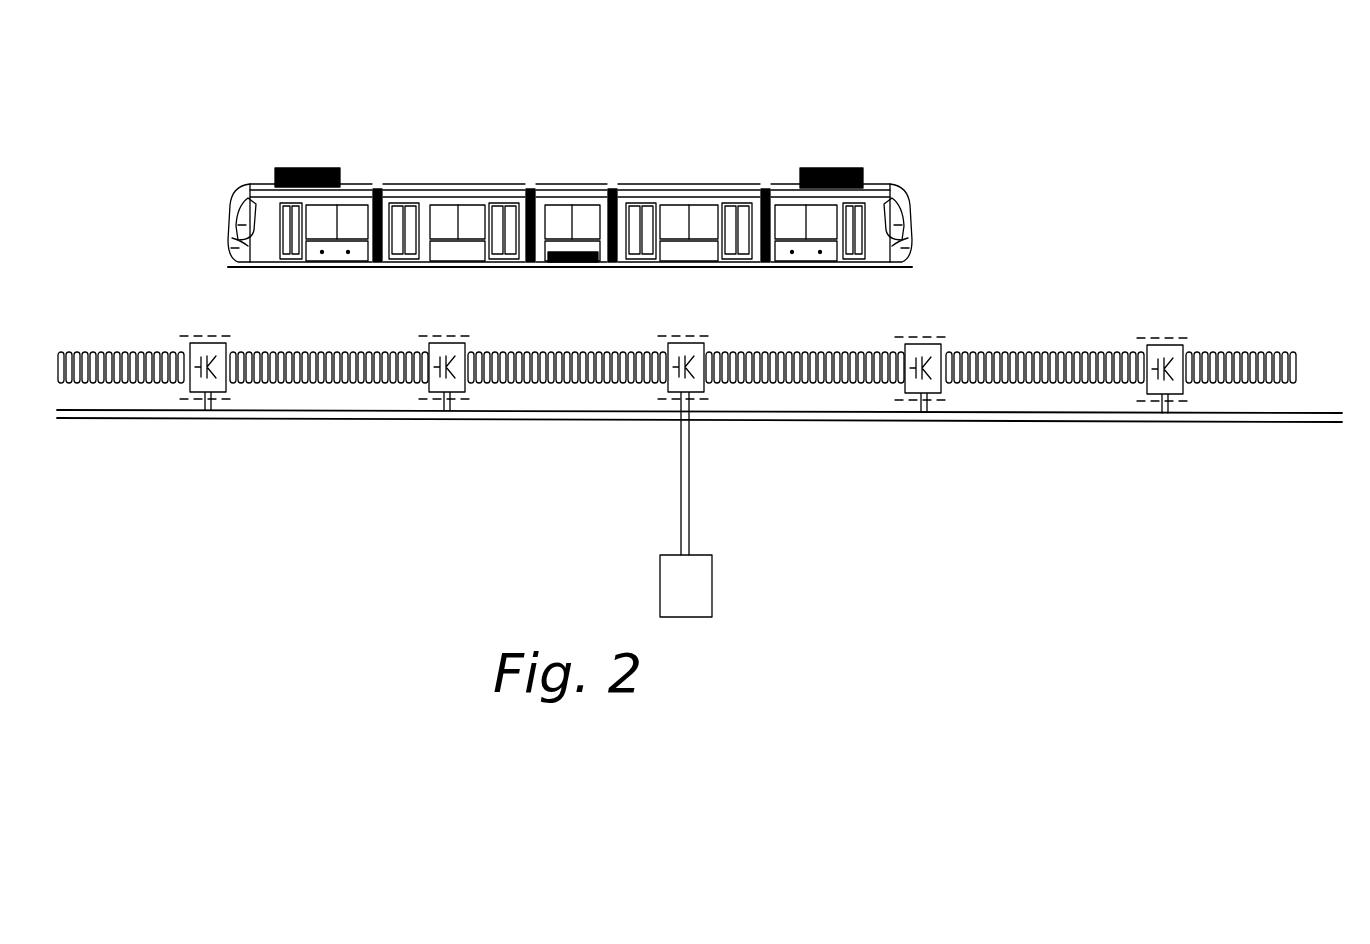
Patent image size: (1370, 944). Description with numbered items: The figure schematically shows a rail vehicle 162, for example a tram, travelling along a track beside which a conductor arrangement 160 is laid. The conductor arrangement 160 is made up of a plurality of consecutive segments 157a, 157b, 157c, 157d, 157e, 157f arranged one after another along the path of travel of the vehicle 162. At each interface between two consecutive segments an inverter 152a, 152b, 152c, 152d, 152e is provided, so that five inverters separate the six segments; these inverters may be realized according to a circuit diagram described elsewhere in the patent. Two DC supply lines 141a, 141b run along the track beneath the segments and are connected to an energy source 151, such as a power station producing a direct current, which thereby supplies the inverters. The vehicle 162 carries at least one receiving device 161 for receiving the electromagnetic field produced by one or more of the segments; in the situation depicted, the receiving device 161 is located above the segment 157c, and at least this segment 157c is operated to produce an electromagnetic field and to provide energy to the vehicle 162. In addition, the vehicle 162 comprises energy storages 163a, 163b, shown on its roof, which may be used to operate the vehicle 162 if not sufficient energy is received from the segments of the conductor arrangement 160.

The DC supply line 141a is at (728, 417).
The DC supply line 141b is at (879, 425).
The energy source 151 is at (718, 584).
The inverter 152a is at (222, 388).
The inverter 152b is at (464, 394).
The inverter 152c is at (670, 387).
The inverter 152d is at (934, 343).
The inverter 152e is at (1171, 340).
The segment 157a is at (97, 348).
The segment 157b is at (325, 348).
The segment 157c is at (570, 348).
The segment 157d is at (805, 348).
The segment 157e is at (1037, 356).
The segment 157f is at (1278, 352).
The conductor arrangement 160 is at (987, 388).
The receiving device 161 is at (584, 252).
The vehicle 162 is at (882, 182).
The energy storage 163a is at (834, 167).
The energy storage 163b is at (301, 166).